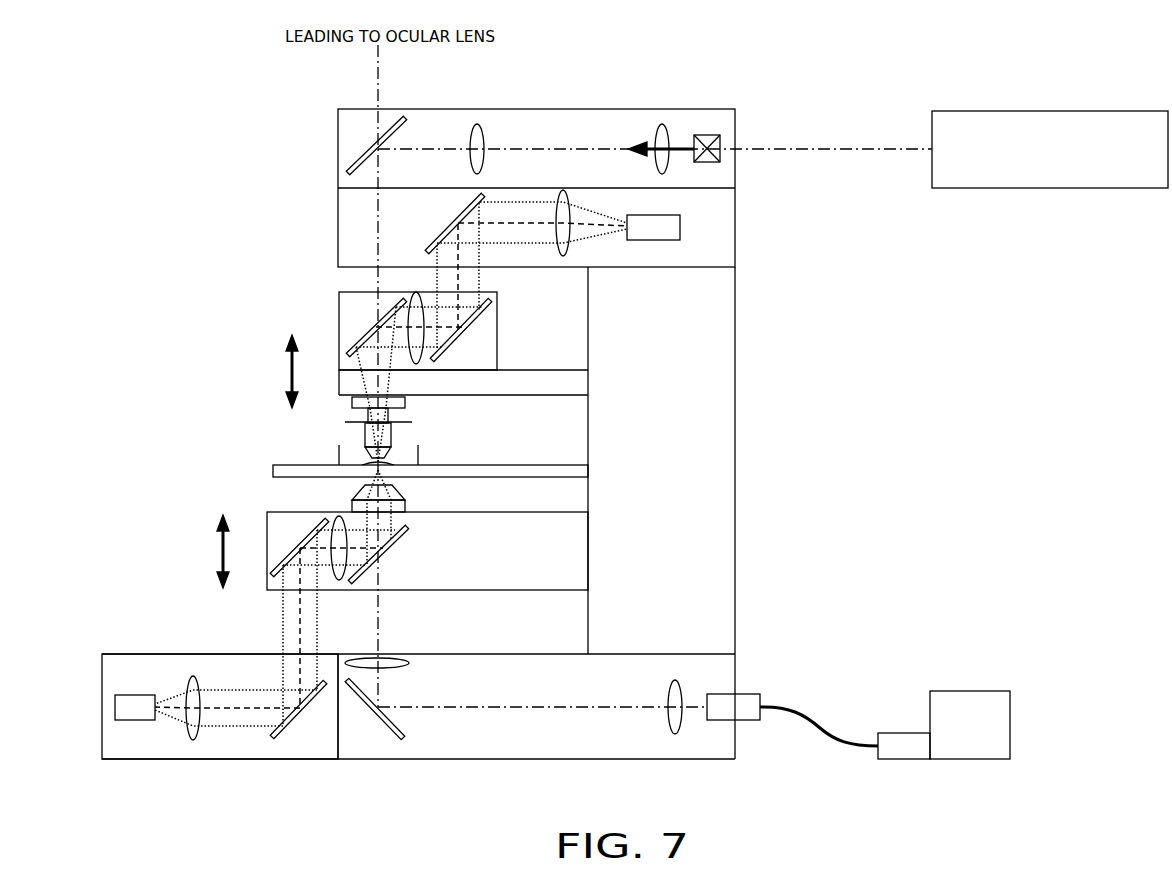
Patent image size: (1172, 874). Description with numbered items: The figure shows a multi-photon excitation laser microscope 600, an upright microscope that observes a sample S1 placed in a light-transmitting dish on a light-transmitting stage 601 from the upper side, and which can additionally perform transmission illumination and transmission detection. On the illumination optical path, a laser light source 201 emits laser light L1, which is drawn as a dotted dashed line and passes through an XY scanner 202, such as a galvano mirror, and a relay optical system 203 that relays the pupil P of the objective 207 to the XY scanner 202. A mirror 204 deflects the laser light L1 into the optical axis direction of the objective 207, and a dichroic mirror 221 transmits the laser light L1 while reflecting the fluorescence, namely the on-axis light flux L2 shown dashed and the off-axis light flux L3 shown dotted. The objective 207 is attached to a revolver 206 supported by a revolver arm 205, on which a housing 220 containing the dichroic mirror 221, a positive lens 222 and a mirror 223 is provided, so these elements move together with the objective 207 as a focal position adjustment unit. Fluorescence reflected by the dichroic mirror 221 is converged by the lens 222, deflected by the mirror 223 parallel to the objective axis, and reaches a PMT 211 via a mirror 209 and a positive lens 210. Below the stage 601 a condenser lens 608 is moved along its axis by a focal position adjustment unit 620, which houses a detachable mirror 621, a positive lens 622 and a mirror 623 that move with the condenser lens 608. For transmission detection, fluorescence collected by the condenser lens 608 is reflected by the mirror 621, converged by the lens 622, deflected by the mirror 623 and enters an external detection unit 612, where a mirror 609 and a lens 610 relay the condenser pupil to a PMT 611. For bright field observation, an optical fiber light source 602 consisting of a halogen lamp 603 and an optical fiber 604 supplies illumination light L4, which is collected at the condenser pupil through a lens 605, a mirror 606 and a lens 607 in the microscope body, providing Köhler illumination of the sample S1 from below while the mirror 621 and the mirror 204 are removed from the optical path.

The multi-photon excitation laser microscope 600 is at (1118, 89).
The laser light source 201 is at (957, 111).
The XY scanner 202 is at (707, 135).
The relay optical system 203 is at (467, 127).
The mirror 204 is at (397, 117).
The revolver arm 205 is at (538, 393).
The revolver 206 is at (352, 401).
The objective 207 is at (365, 430).
The mirror 209 is at (445, 212).
The lens 210 is at (567, 256).
The PMT 211 is at (682, 228).
The housing 220 is at (339, 328).
The dichroic mirror 221 is at (362, 328).
The lens 222 is at (417, 293).
The mirror 223 is at (467, 325).
The stage 601 is at (276, 470).
The optical fiber light source 602 is at (858, 690).
The halogen lamp 603 is at (970, 705).
The optical fiber 604 is at (807, 710).
The lens 605 is at (675, 736).
The mirror 606 is at (389, 736).
The lens 607 is at (388, 663).
The condenser lens 608 is at (405, 505).
The mirror 609 is at (278, 739).
The lens 610 is at (195, 742).
The PMT 611 is at (130, 722).
The external detection unit 612 is at (128, 655).
The focal position adjustment unit 620 is at (267, 527).
The mirror 621 is at (362, 586).
The lens 622 is at (338, 517).
The mirror 623 is at (297, 538).
The laser light L1 is at (785, 149).
The on-axis light flux L2 is at (528, 227).
The off-axis light flux L3 is at (549, 244).
The illumination light L4 is at (521, 710).
The pupil P is at (412, 421).
The sample S1 is at (414, 442).